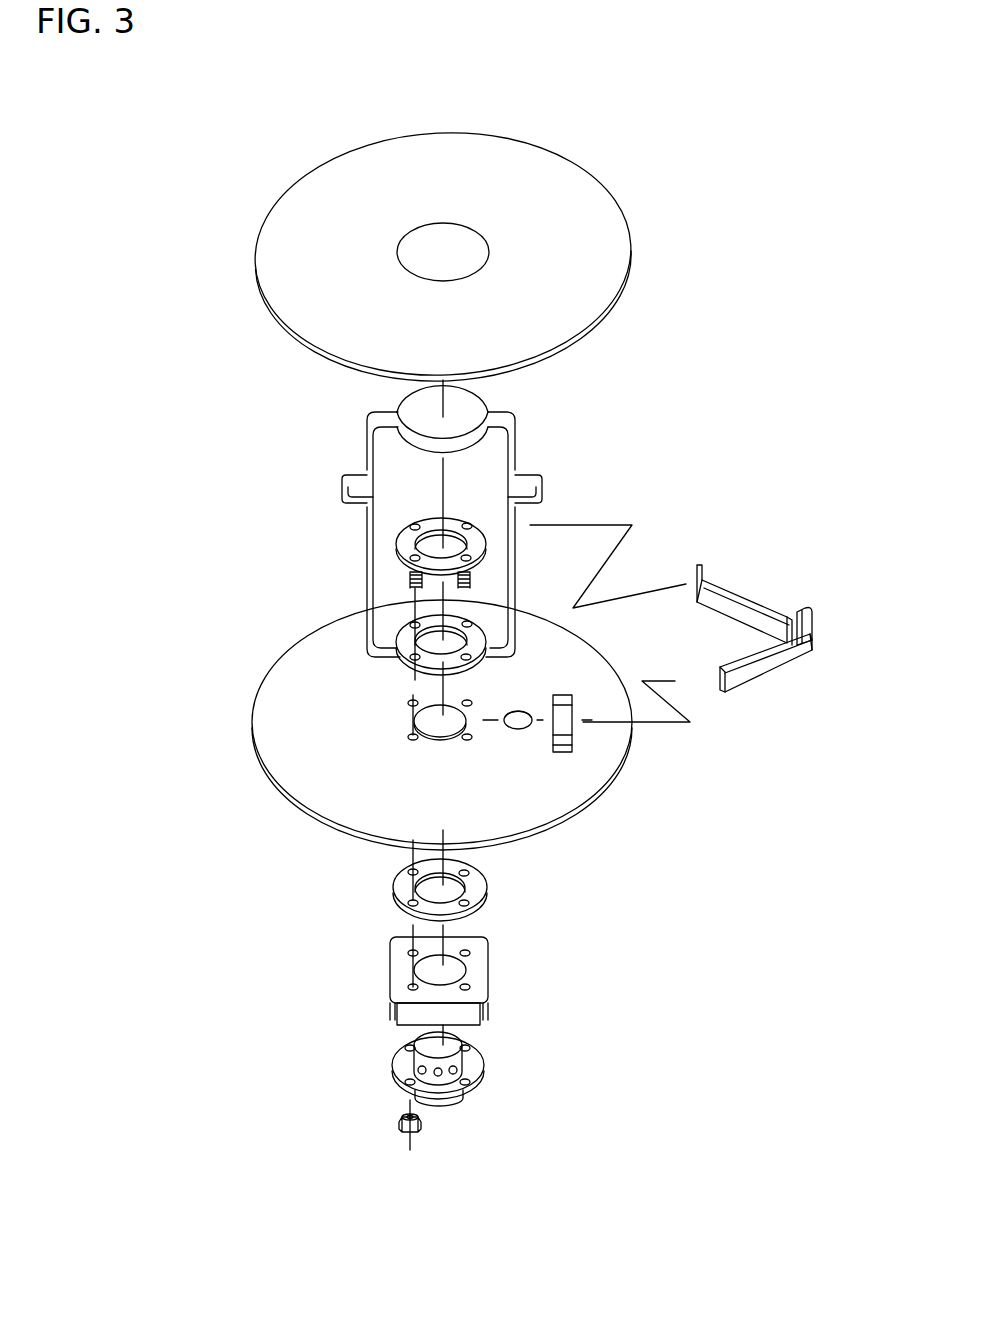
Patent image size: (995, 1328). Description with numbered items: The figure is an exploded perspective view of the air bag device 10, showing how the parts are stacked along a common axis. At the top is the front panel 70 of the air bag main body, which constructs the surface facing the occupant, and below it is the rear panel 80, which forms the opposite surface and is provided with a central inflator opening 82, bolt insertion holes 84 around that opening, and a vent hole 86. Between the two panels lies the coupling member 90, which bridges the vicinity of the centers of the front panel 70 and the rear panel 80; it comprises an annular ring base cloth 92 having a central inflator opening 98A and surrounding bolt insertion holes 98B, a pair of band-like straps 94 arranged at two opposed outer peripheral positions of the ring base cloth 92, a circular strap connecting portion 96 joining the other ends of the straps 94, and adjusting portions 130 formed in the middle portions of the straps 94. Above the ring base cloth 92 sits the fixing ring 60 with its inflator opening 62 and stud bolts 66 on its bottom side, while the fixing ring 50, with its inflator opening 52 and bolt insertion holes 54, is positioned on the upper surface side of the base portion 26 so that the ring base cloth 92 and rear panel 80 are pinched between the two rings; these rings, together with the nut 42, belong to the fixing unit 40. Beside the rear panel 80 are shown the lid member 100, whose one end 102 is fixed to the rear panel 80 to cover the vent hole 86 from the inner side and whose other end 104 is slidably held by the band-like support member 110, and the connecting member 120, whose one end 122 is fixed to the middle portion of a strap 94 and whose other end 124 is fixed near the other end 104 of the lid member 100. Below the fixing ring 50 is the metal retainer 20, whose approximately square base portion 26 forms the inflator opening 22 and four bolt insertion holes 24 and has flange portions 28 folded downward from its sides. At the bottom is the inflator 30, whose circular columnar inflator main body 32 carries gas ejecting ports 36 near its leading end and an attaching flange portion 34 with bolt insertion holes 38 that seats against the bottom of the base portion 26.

The air bag device 10 is at (680, 297).
The retainer 20 is at (449, 983).
The inflator opening 22 is at (488, 999).
The bolt insertion holes 24 is at (408, 953).
The base portion 26 is at (390, 986).
The flange portions 28 is at (390, 1019).
The inflator 30 is at (476, 1090).
The inflator main body 32 is at (455, 1097).
The attaching flange portion 34 is at (392, 1071).
The gas ejecting ports 36 is at (478, 1071).
The bolt insertion holes 38 is at (400, 1083).
The fixing unit 40 is at (303, 967).
The nut 42 is at (398, 1124).
The fixing ring 50 is at (430, 880).
The inflator opening 52 is at (483, 893).
The bolt insertion holes 54 is at (400, 867).
The fixing ring 60 is at (396, 520).
The inflator opening 62 is at (418, 526).
The stud bolts 66 is at (406, 586).
The front panel 70 is at (252, 248).
The rear panel 80 is at (399, 749).
The inflator opening 82 is at (414, 721).
The bolt insertion holes 84 is at (408, 703).
The vent hole 86 is at (522, 729).
The coupling member 90 is at (441, 511).
The ring base cloth 92 is at (443, 629).
The straps 94 is at (528, 452).
The strap connecting portion 96 is at (522, 403).
The inflator opening 98A is at (462, 642).
The bolt insertion holes 98B is at (470, 624).
The lid member 100 is at (775, 668).
The one end 102 is at (728, 693).
The other end 104 is at (812, 636).
The support member 110 is at (565, 753).
The connecting member 120 is at (783, 632).
The one end 122 is at (698, 564).
The other end 124 is at (797, 611).
The adjusting portions 130 is at (548, 489).